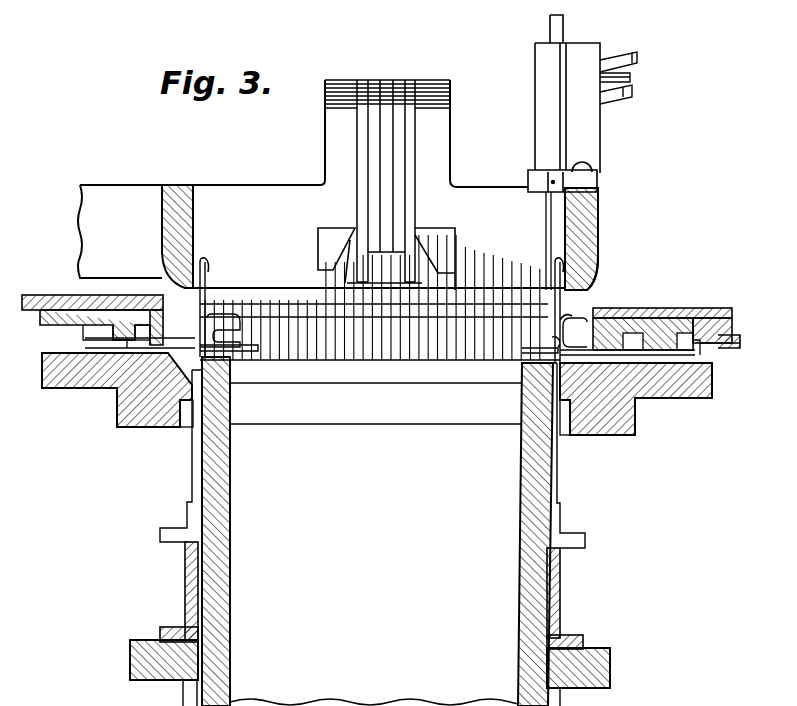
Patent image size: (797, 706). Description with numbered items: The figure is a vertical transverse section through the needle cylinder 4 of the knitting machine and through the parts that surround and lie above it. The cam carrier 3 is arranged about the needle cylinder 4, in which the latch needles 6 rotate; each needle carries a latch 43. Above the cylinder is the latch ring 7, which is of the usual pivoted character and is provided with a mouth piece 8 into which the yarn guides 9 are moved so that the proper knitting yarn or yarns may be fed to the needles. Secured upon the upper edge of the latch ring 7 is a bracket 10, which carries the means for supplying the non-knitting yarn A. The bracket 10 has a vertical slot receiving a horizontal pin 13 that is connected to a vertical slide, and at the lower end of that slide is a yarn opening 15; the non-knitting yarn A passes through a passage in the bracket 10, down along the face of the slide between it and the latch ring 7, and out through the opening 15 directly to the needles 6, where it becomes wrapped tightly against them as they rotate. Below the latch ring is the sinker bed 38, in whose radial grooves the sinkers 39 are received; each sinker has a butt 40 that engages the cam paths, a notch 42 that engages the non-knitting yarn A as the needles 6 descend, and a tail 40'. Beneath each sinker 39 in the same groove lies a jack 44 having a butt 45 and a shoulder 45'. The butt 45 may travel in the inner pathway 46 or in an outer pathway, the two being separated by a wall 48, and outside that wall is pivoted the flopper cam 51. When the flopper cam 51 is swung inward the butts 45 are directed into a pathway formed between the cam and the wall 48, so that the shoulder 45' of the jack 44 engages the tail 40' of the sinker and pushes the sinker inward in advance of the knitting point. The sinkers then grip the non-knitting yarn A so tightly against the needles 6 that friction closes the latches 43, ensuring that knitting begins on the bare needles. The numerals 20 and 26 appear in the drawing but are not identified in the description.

The cam carrier 3 is at (552, 589).
The needle cylinder 4 is at (545, 466).
The needles 6 is at (198, 474).
The latch ring 7 is at (266, 184).
The mouth piece 8 is at (337, 278).
The yarn guides 9 is at (410, 74).
The bracket 10 is at (541, 79).
The horizontal pin 13 is at (636, 78).
The yarn opening 15 is at (550, 182).
The arm 20 is at (634, 92).
The arm 26 is at (639, 58).
The sinker bed 38 is at (597, 423).
The sinkers 39 is at (222, 320).
The butts 40 is at (366, 316).
The tail 40' is at (384, 375).
The notches 42 is at (566, 320).
The latches 43 is at (200, 269).
The jack 44 is at (97, 350).
The butt 45 is at (377, 309).
The shoulder 45' is at (393, 348).
The inner pathway 46 is at (670, 335).
The wall 48 is at (720, 311).
The flopper cam 51 is at (737, 340).
The non-knitting yarn A is at (547, 192).